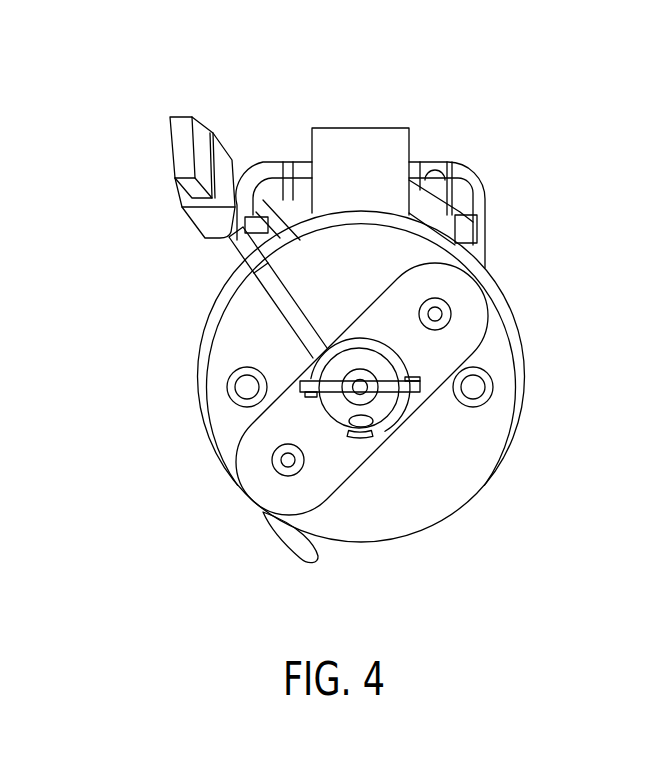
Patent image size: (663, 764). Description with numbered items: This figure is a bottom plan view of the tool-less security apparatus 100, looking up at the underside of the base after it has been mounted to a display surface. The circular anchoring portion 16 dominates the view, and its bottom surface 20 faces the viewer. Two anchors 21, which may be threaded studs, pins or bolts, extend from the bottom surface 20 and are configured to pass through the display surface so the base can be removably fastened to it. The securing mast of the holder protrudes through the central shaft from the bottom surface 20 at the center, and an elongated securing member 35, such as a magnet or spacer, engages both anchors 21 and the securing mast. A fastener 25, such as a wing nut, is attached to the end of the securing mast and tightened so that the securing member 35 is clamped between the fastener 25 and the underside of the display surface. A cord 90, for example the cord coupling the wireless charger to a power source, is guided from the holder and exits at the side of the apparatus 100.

The security apparatus 100 is at (101, 79).
The anchoring portion 16 is at (508, 433).
The bottom surface 20 is at (363, 518).
The anchors 21 is at (450, 305).
The fastener 25 is at (383, 392).
The securing member 35 is at (472, 330).
The cords 90 is at (233, 257).